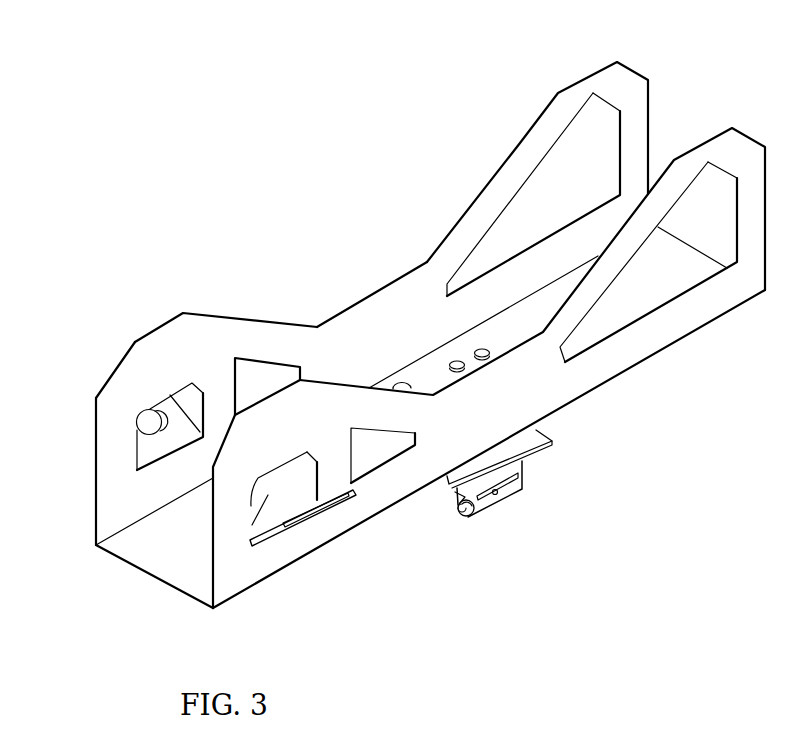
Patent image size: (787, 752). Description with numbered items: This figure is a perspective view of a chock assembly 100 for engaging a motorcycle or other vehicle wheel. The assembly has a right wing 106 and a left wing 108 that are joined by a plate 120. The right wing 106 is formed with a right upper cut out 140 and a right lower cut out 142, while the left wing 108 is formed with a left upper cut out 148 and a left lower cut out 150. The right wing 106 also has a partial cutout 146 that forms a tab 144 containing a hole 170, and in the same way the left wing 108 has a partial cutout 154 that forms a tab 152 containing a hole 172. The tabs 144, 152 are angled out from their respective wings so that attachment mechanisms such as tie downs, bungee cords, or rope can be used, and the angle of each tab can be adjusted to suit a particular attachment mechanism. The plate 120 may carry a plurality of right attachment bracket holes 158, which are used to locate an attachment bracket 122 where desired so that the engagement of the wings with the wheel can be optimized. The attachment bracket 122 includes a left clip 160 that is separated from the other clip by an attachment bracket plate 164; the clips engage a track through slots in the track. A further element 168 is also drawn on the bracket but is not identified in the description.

The chock assembly 100 is at (310, 262).
The right wing 106 is at (113, 510).
The left wing 108 is at (212, 575).
The plate 120 is at (125, 563).
The attachment bracket 122 is at (445, 503).
The right upper cut out 140 is at (252, 368).
The right lower cut out 142 is at (565, 152).
The tab 144 is at (167, 410).
The partial cutout 146 is at (226, 277).
The left upper cut out 148 is at (374, 450).
The left lower cut out 150 is at (677, 267).
The tab 152 is at (338, 496).
The partial cutout 154 is at (251, 506).
The right attachment bracket holes 158 is at (453, 361).
The left clip 160 is at (524, 484).
The attachment bracket plate 164 is at (552, 441).
The curled end 168 is at (471, 516).
The hole 170 is at (79, 370).
The hole 172 is at (300, 518).